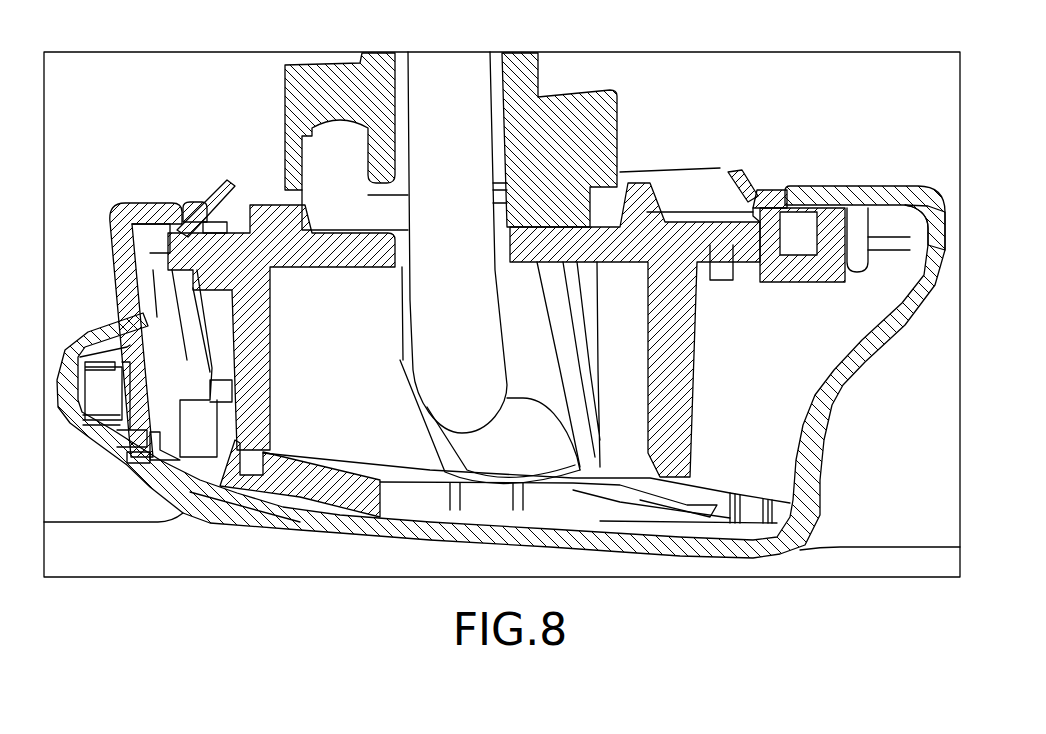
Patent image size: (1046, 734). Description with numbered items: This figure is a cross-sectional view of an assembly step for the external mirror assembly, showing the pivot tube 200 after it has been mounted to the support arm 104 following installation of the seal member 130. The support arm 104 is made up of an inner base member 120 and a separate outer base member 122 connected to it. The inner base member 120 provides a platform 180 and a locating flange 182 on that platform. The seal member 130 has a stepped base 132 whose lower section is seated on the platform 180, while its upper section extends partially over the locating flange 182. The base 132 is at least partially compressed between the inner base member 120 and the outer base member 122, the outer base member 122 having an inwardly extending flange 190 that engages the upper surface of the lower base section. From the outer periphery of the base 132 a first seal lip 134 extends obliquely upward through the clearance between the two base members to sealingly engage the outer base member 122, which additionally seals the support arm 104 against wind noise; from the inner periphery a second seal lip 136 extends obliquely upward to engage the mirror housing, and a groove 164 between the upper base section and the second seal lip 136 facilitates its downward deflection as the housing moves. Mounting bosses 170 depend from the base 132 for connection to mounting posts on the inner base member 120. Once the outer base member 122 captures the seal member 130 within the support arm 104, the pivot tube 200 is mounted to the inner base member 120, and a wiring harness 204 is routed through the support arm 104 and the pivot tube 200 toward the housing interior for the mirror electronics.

The support arm 104 is at (858, 187).
The inner base member 120 is at (314, 270).
The outer base member 122 is at (876, 378).
The seal member 130 is at (766, 192).
The base 132 is at (192, 204).
The first seal lip 134 is at (828, 212).
The second seal lip 136 is at (748, 200).
The groove 164 is at (208, 205).
The mounting bosses 170 is at (800, 258).
The platform 180 is at (167, 253).
The locating flange 182 is at (757, 216).
The flange 190 is at (148, 205).
The pivot tube 200 is at (591, 89).
The wiring harness 204 is at (477, 462).